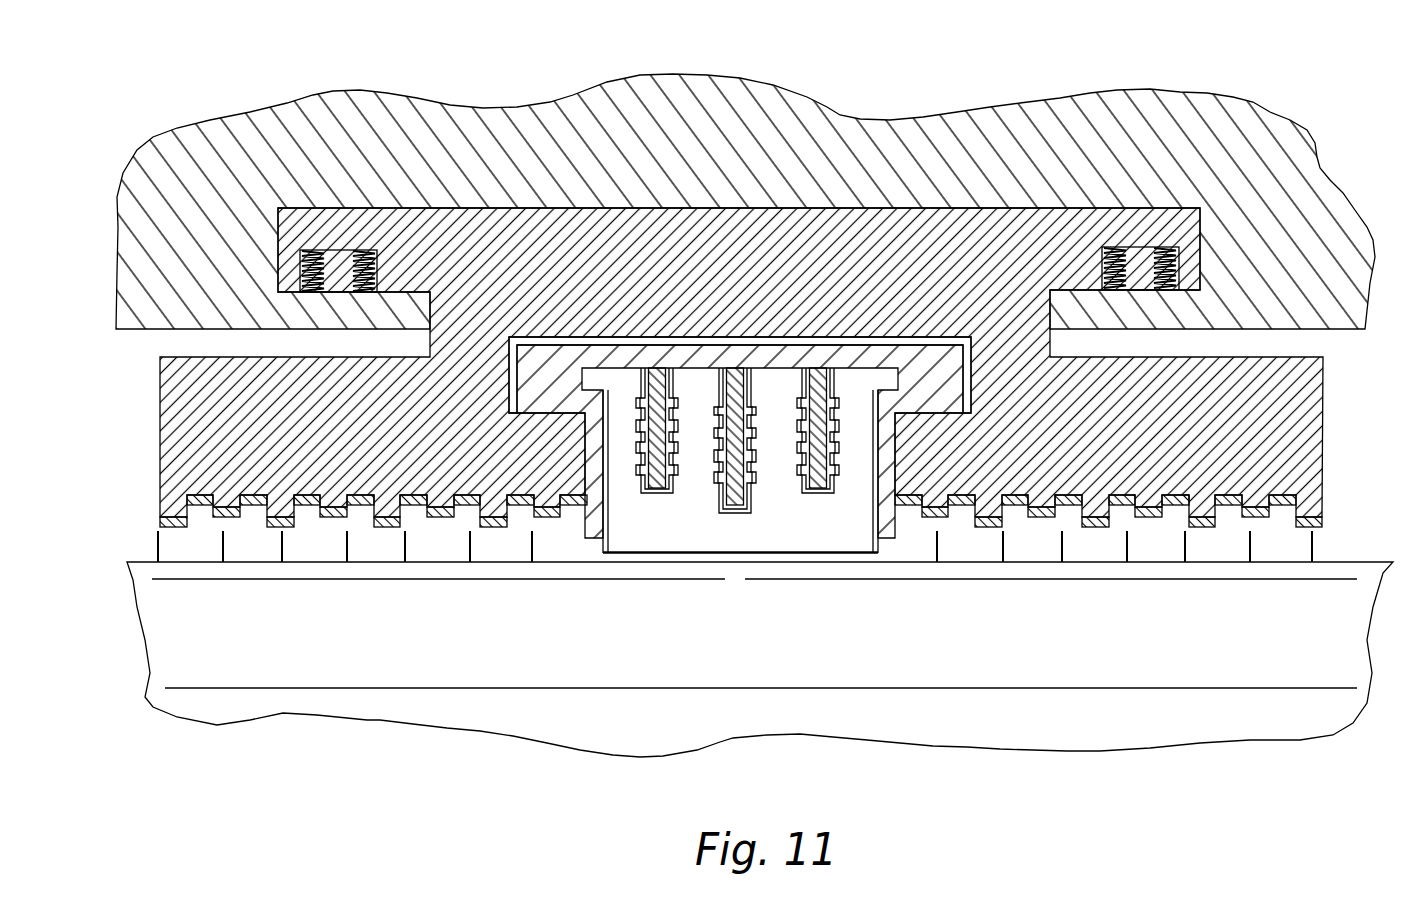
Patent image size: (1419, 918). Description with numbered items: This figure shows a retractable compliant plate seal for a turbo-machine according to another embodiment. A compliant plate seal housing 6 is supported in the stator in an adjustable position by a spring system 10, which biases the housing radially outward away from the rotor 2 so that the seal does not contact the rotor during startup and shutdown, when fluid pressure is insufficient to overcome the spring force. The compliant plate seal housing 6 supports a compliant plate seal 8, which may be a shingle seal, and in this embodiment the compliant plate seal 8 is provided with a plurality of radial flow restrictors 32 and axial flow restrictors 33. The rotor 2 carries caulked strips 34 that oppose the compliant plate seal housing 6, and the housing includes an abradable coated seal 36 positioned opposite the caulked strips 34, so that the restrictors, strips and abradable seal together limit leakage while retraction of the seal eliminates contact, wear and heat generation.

The rotor 2 is at (748, 664).
The compliant plate seal housing 6 is at (830, 265).
The compliant plate seal 8 is at (775, 497).
The spring system 10 is at (313, 257).
The radial flow restrictor 32 is at (705, 499).
The axial flow restrictor 33 is at (657, 478).
The caulked strips 34 is at (1130, 540).
The abradable coated seal 36 is at (1268, 465).